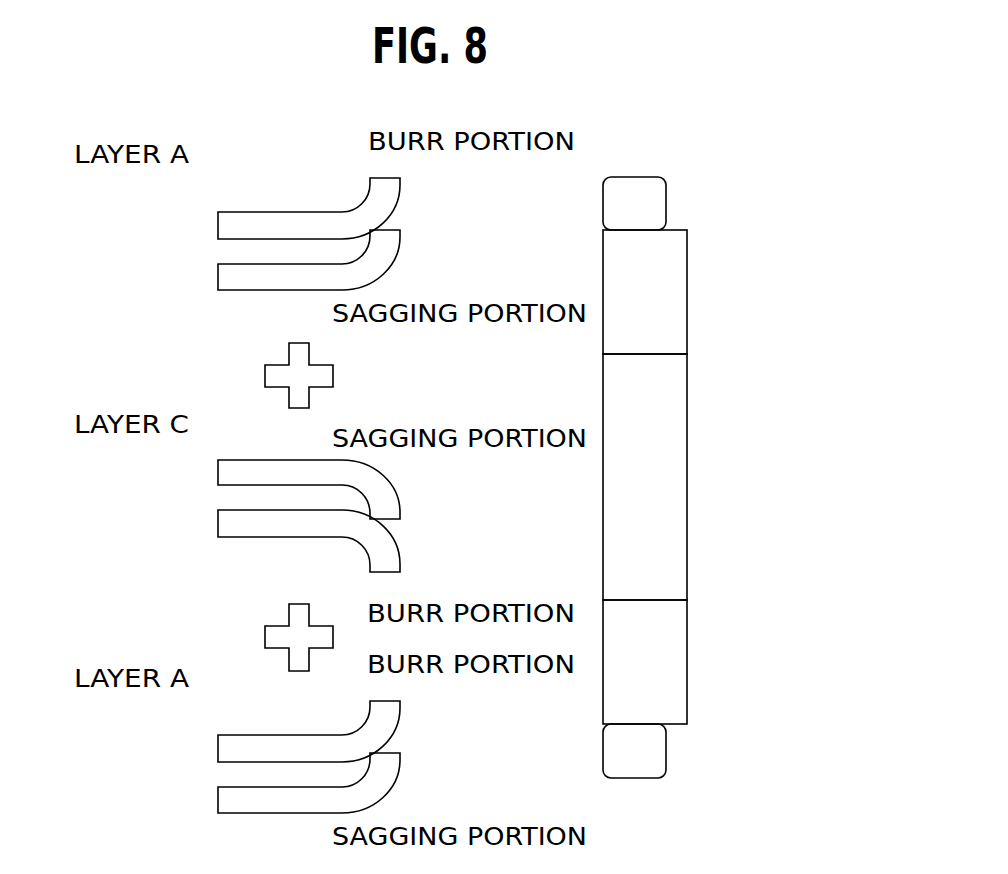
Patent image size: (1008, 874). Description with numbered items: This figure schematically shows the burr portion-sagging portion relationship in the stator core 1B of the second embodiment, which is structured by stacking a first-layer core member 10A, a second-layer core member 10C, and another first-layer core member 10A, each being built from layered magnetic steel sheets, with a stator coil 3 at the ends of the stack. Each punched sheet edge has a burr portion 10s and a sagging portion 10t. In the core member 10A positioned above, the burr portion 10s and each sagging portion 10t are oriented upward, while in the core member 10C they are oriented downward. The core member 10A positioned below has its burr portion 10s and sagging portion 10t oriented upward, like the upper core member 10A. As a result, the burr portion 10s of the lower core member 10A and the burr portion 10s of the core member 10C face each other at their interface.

The stator core 1B is at (725, 433).
The stator coil 3 is at (666, 205).
The core member 10A is at (687, 303).
The core member 10C is at (687, 477).
The burr portion 10s is at (400, 185).
The sagging portion 10t is at (400, 242).